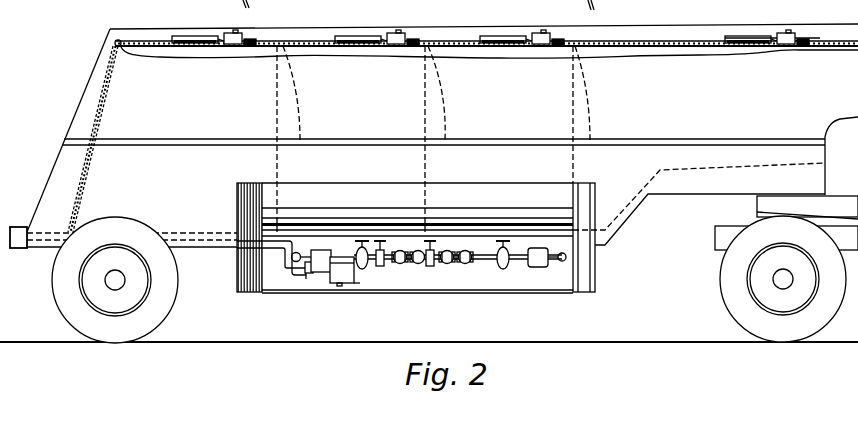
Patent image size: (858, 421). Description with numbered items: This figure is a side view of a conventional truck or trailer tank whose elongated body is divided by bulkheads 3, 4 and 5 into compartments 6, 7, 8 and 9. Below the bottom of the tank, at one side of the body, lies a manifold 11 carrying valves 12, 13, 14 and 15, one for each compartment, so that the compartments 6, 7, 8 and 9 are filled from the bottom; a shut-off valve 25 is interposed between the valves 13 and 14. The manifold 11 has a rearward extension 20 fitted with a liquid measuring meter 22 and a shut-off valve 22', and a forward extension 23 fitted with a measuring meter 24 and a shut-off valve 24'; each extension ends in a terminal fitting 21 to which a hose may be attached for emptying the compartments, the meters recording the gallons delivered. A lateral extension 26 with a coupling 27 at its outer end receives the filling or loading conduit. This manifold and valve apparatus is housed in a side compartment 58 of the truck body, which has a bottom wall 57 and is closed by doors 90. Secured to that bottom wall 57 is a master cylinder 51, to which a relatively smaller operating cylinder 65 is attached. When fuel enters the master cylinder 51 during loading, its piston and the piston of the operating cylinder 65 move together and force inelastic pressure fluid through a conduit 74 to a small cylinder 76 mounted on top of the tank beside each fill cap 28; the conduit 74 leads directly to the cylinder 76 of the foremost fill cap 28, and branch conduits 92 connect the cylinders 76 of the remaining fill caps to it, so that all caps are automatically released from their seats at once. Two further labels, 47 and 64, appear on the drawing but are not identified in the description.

The bulkhead 3 is at (293, 86).
The bulkhead 4 is at (440, 86).
The bulkhead 5 is at (588, 86).
The compartment 6 is at (203, 106).
The compartment 7 is at (373, 106).
The compartment 8 is at (533, 106).
The compartment 9 is at (726, 106).
The manifold 11 is at (484, 262).
The valve 12 is at (400, 263).
The valve 13 is at (418, 270).
The valve 14 is at (451, 263).
The valve 15 is at (466, 265).
The rearward extension 20 is at (343, 257).
The terminal fitting 21 is at (296, 252).
The liquid measuring meter 22 is at (321, 231).
The shut-off valve 22' is at (367, 230).
The forward extension 23 is at (540, 267).
The measuring meter 24 is at (541, 285).
The shut-off valve 24' is at (509, 265).
The shut-off valve 25 is at (431, 267).
The lateral extension 26 is at (387, 268).
The coupling 27 is at (390, 275).
The fill cap 28 is at (190, 36).
The tank cover 47 is at (663, 47).
The master cylinder 51 is at (339, 286).
The bottom wall 57 is at (282, 285).
The side compartment 58 is at (273, 285).
The pump outlet 64 is at (356, 285).
The operating cylinder 65 is at (312, 275).
The conduit 74 is at (104, 85).
The small cylinder 76 is at (235, 31).
The door 90 is at (595, 262).
The branch conduit 92 is at (254, 40).